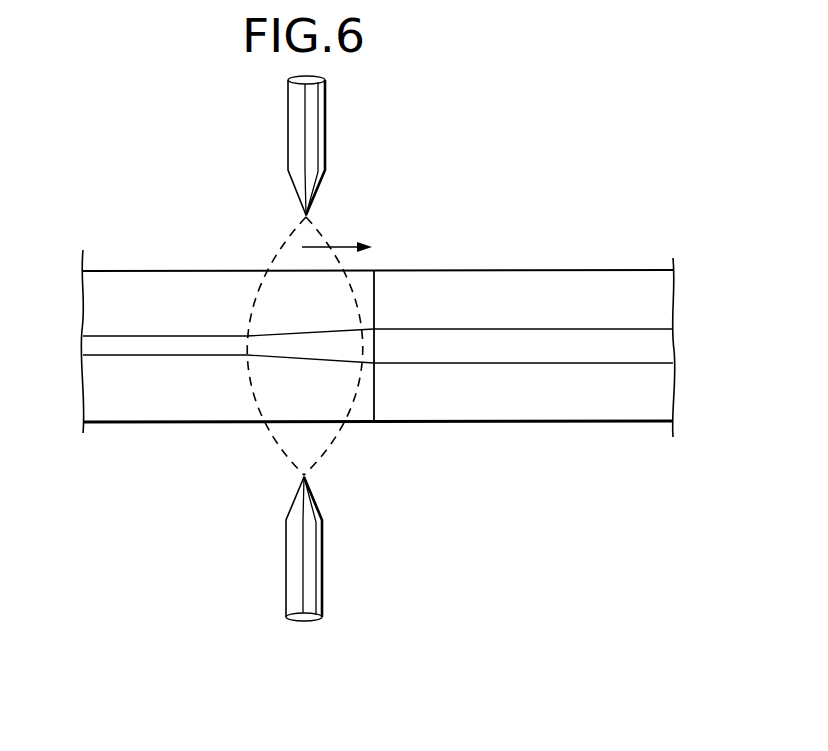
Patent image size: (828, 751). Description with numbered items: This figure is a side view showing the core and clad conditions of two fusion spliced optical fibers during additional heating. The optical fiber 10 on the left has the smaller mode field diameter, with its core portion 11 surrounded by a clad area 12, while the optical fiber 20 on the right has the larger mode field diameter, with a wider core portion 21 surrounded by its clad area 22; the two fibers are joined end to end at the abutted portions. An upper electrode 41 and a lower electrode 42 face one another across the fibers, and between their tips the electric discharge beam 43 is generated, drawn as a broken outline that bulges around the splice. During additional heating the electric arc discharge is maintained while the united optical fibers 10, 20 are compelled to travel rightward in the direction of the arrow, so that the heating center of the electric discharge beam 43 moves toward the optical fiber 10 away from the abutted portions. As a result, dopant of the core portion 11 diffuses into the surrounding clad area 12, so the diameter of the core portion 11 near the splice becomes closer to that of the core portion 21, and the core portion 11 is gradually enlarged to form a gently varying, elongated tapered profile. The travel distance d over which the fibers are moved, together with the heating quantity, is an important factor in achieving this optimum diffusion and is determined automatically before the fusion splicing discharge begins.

The optical fiber 10 is at (125, 288).
The core portion 11 is at (117, 347).
The clad area 12 is at (198, 405).
The optical fiber 20 is at (623, 290).
The core portion 21 is at (507, 353).
The clad area 22 is at (622, 408).
The discharge electrode 41 is at (327, 125).
The discharge electrode 42 is at (322, 573).
The electric discharge beam 43 is at (279, 242).
The travel distance d is at (338, 244).